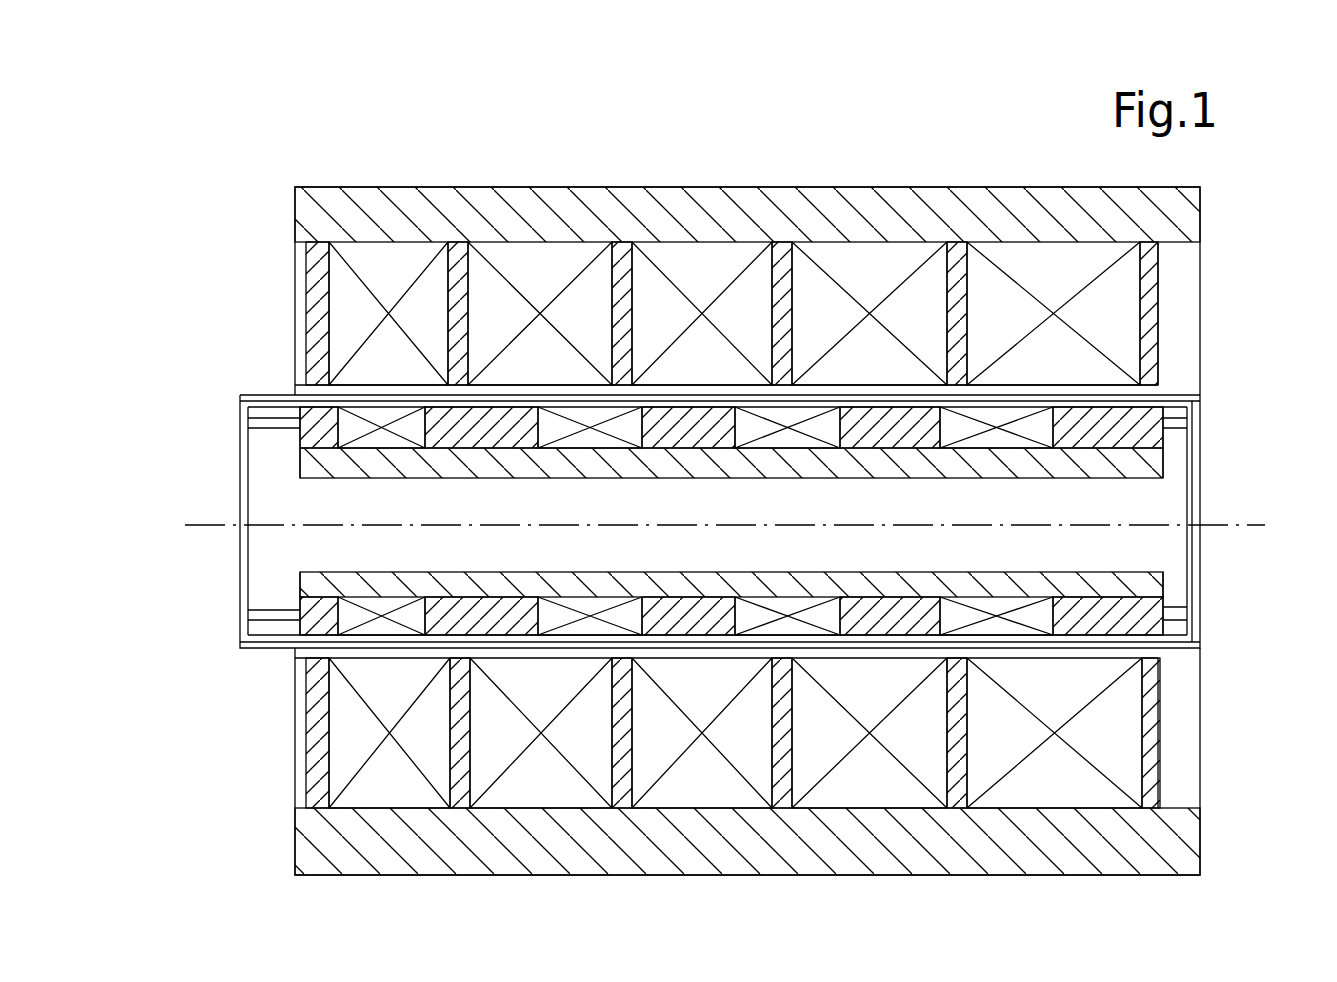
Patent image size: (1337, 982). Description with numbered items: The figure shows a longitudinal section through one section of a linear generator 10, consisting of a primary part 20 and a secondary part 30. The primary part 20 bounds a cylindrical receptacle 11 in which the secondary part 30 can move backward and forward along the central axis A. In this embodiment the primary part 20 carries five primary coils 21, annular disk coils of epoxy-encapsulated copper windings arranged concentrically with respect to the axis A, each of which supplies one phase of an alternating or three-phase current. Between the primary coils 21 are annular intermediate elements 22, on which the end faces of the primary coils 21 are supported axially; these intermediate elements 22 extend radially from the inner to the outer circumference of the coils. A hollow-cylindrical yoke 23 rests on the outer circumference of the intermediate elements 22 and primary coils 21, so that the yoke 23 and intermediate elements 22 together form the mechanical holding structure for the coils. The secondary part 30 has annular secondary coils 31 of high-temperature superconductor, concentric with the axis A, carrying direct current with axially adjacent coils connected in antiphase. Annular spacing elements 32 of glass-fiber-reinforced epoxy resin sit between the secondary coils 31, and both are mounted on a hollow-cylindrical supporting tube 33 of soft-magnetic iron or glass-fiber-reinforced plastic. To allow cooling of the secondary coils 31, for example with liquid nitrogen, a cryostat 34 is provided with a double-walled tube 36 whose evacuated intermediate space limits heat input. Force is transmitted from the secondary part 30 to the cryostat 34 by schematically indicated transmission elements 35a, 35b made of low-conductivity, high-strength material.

The linear generator 10 is at (243, 237).
The cylindrical receptacle 11 is at (290, 387).
The primary part 20 is at (272, 300).
The primary coils 21 is at (660, 250).
The intermediate elements 22 is at (952, 290).
The yoke 23 is at (480, 200).
The secondary part 30 is at (278, 437).
The secondary coils 31 is at (775, 442).
The spacing elements 32 is at (905, 448).
The supporting tube 33 is at (1032, 460).
The cryostat 34 is at (1202, 462).
The transmission element 35a is at (266, 613).
The transmission element 35b is at (1172, 612).
The double-walled tube 36 is at (1165, 392).
The central axis A is at (218, 527).